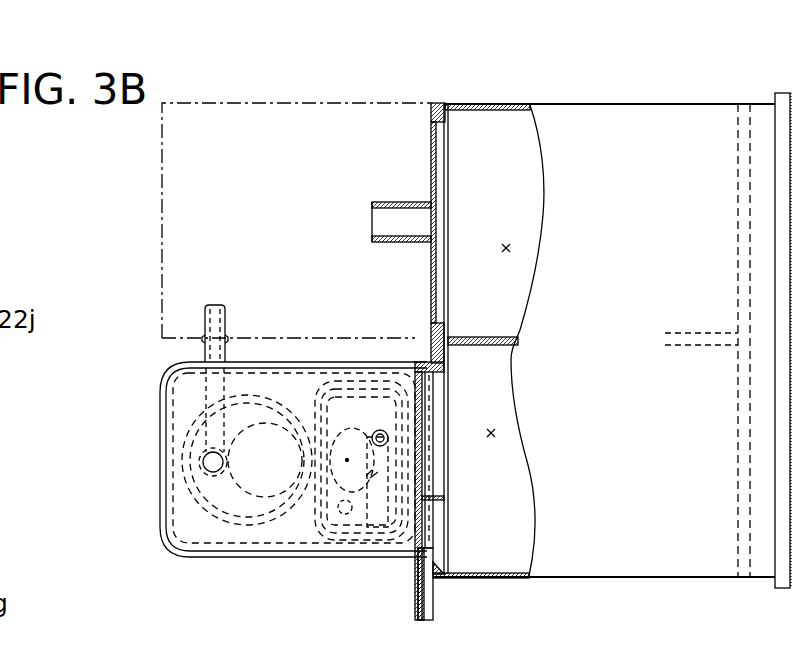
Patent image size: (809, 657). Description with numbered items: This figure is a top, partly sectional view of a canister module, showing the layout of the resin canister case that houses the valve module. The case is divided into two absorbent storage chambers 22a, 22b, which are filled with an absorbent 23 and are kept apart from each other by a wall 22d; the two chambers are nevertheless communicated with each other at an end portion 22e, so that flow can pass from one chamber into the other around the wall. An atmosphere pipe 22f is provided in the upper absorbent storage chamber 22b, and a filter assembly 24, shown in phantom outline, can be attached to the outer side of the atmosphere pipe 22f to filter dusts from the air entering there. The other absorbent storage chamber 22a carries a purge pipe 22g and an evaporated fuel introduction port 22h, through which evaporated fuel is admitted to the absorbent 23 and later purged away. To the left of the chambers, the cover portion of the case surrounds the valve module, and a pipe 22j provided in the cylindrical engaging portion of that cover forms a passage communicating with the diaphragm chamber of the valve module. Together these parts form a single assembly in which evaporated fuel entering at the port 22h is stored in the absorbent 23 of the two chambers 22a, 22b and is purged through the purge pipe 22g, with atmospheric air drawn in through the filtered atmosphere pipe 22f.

The filter assembly 24 is at (162, 176).
The atmosphere pipe 22f is at (394, 202).
The absorbent storage chamber 22b is at (482, 110).
The absorbent 23 is at (505, 244).
The wall 22d is at (485, 337).
The evaporated fuel introduction port 22h is at (419, 413).
The absorbent storage chamber 22a is at (507, 573).
The purge pipe 22g is at (433, 606).
The end portion 22e is at (762, 455).
The pipe 22j is at (226, 320).